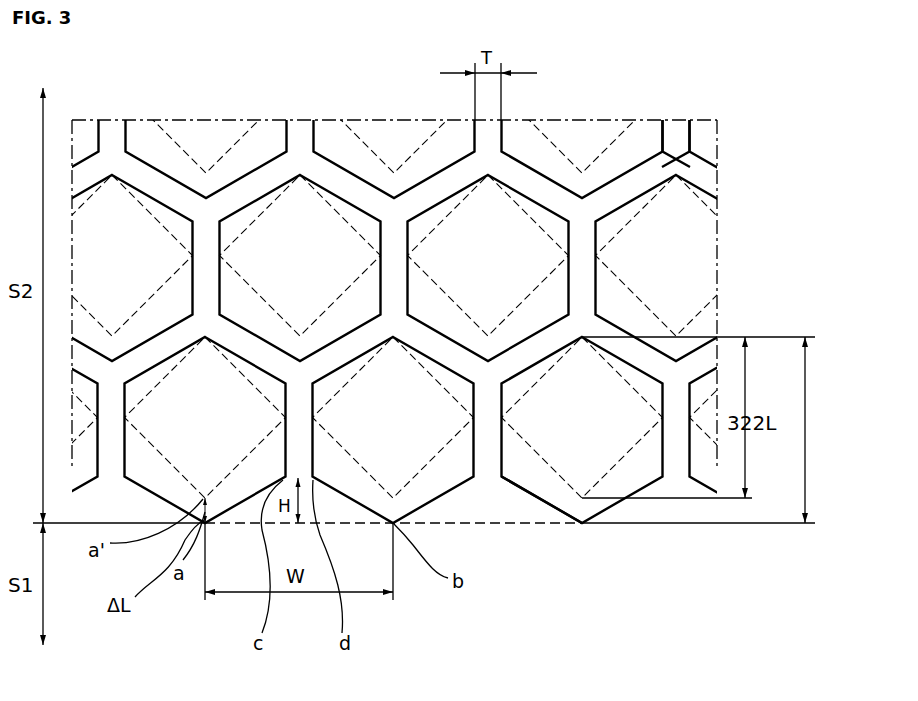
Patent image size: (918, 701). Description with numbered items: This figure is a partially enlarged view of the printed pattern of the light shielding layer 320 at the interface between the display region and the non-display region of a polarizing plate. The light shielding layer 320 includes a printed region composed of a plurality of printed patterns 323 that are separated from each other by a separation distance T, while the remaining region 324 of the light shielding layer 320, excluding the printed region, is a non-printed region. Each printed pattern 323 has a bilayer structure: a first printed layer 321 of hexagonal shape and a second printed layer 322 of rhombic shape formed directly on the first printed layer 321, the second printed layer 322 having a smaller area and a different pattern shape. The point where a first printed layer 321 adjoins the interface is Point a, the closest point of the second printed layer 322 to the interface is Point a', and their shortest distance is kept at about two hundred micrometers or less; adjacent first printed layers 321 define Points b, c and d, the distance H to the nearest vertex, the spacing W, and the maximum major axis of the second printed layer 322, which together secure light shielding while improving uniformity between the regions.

The light shielding layer 320 is at (855, 122).
The first printed layer 321 is at (662, 452).
The second printed layer 322 is at (628, 385).
The printed pattern 323 is at (542, 512).
The remaining region 324 is at (678, 158).